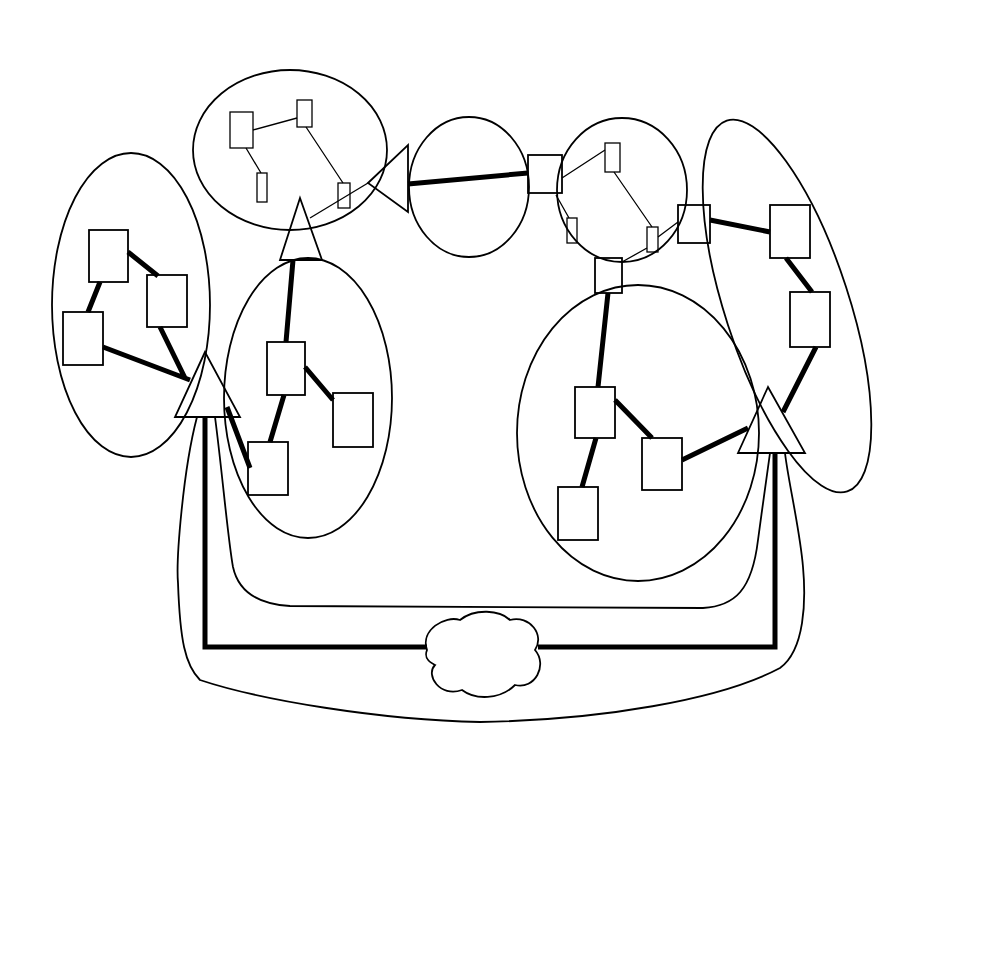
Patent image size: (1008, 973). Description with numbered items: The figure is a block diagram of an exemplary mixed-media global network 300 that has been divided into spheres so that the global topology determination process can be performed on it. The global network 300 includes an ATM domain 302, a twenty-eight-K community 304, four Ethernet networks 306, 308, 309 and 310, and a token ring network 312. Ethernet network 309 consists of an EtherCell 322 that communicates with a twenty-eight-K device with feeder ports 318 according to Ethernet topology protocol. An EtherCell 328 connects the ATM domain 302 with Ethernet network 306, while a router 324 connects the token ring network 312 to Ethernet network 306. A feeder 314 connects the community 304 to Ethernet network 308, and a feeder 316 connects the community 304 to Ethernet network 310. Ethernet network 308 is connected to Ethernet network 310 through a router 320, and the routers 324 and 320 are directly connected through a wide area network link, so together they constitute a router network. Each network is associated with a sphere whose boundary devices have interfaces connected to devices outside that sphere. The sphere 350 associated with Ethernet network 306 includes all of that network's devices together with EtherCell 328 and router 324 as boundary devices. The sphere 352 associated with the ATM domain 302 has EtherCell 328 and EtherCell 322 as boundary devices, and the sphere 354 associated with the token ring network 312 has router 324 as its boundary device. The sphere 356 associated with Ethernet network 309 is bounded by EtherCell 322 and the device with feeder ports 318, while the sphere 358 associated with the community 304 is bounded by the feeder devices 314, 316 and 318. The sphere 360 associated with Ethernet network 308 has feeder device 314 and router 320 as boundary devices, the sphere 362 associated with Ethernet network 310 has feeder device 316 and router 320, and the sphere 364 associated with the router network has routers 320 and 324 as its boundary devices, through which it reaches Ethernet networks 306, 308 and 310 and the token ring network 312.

The global network 300 is at (178, 740).
The ATM domain 302 is at (350, 106).
The 28K community 304 is at (655, 143).
The Ethernet network 306 is at (366, 372).
The Ethernet network 308 is at (537, 397).
The Ethernet network 309 is at (466, 138).
The Ethernet network 310 is at (852, 392).
The token ring network 312 is at (130, 169).
The 28K feeder 314 is at (595, 278).
The 28K feeder 316 is at (694, 243).
The 28K device with feeder ports 318 is at (545, 155).
The router 320 is at (790, 455).
The EtherCell 322 is at (396, 205).
The router 324 is at (195, 418).
The EtherCell 328 is at (323, 236).
The sphere 350 is at (378, 296).
The sphere 352 is at (270, 70).
The sphere 354 is at (128, 458).
The sphere 356 is at (487, 118).
The sphere 358 is at (603, 120).
The sphere 360 is at (528, 375).
The sphere 362 is at (835, 253).
The sphere 364 is at (493, 722).